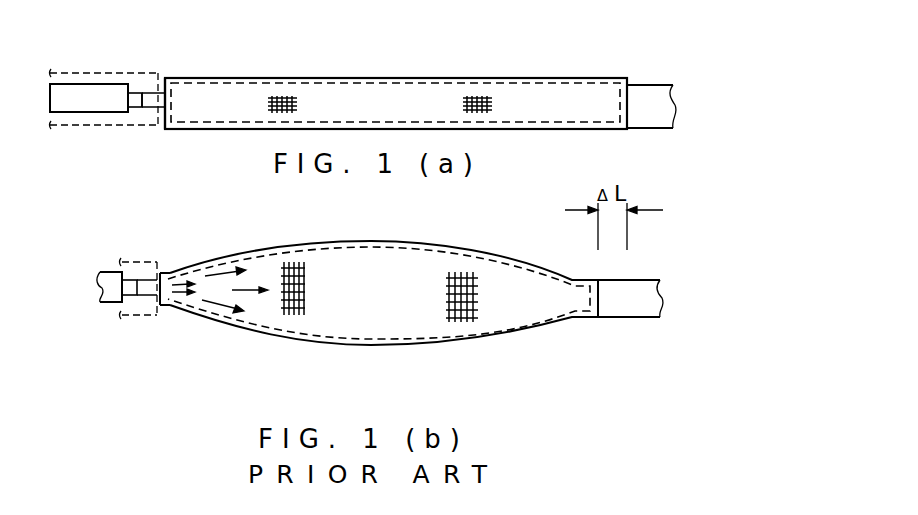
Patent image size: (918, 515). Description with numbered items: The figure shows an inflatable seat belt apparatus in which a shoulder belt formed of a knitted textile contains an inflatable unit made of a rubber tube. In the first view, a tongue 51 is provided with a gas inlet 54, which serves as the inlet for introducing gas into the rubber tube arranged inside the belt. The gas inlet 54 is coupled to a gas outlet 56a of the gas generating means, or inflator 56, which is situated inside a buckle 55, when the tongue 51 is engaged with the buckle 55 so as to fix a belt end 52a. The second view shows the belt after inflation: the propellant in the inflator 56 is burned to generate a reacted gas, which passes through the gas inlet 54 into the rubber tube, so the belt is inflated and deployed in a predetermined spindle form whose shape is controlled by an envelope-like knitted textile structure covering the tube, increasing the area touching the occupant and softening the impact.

The tongue 51 is at (152, 93).
The belt end 52a is at (171, 128).
The gas inlet 54 is at (153, 108).
The buckle 55 is at (93, 127).
The gas generating means (inflator) 56 is at (83, 84).
The gas outlet 56a is at (137, 108).